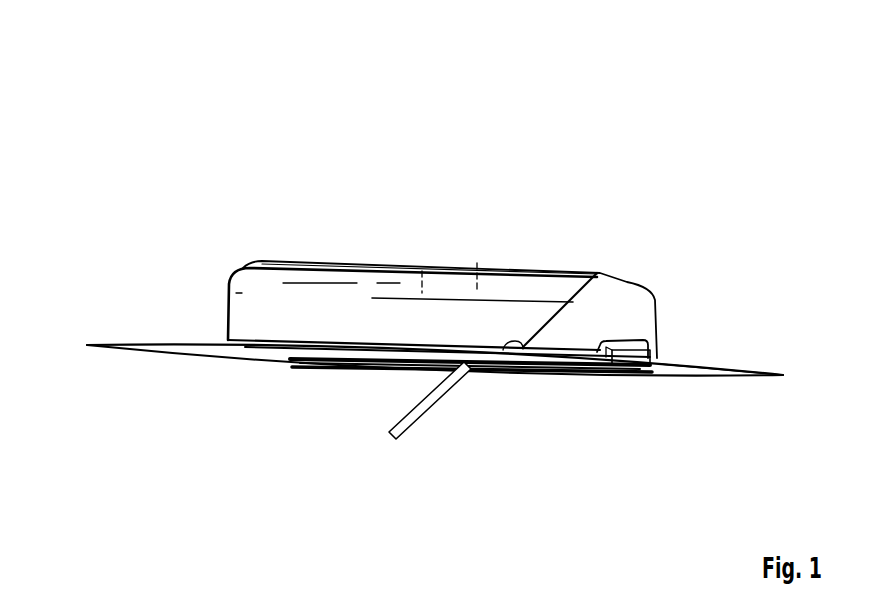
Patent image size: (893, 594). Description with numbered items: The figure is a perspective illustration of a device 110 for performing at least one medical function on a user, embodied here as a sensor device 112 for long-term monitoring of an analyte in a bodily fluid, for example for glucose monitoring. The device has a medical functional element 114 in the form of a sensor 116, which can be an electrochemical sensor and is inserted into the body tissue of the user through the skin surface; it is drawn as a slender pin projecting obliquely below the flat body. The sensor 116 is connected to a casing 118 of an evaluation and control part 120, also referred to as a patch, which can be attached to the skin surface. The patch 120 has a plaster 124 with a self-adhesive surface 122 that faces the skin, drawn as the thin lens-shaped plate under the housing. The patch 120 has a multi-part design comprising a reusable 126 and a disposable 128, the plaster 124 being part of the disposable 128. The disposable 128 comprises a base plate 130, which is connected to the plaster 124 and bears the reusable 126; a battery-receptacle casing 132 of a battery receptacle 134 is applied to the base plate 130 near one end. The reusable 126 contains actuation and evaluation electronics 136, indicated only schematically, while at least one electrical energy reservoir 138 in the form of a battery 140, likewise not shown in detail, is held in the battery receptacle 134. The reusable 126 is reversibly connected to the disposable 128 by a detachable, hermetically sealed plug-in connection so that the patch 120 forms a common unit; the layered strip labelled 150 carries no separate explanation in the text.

The device 110 is at (454, 280).
The sensor device 112 is at (454, 280).
The medical functional element 114 is at (429, 449).
The sensor 116 is at (412, 442).
The casing 118 is at (524, 262).
The evaluation and control part 120 is at (524, 262).
The self-adhesive surface 122 is at (243, 357).
The plaster 124 is at (705, 378).
The reusable 126 is at (358, 270).
The disposable 128 is at (454, 349).
The base plate 130 is at (471, 418).
The battery-receptacle casing 132 is at (709, 292).
The battery receptacle 134 is at (643, 302).
The actuation and evaluation electronics 136 is at (401, 268).
The electrical energy reservoir 138 is at (525, 270).
The battery 140 is at (613, 280).
The strip 150 is at (632, 375).